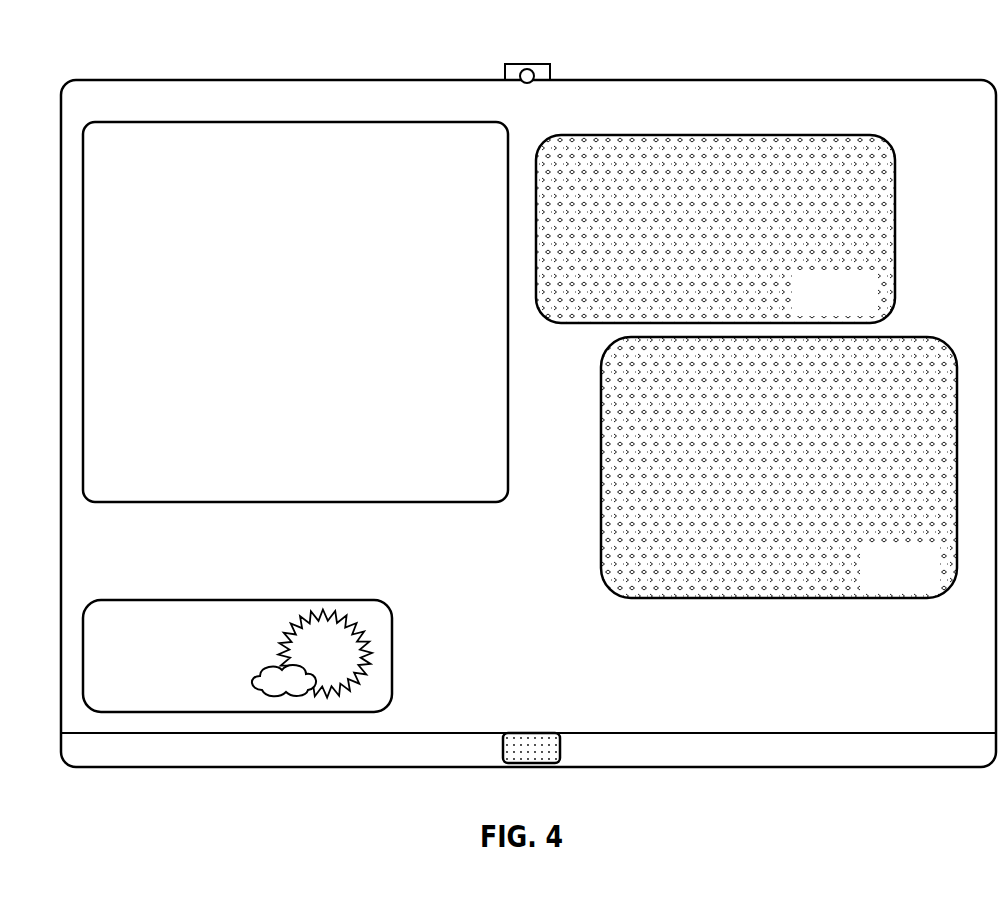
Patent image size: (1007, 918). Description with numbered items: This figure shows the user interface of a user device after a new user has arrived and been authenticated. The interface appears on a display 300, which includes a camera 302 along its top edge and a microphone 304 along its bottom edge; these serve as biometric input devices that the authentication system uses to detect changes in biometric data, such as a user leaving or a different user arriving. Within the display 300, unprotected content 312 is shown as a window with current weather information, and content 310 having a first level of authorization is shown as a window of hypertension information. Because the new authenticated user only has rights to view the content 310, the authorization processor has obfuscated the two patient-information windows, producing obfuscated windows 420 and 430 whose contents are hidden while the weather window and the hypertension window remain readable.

The display 300 is at (973, 727).
The camera 302 is at (553, 60).
The microphone 304 is at (535, 733).
The content having a first level of authorization 310 is at (483, 494).
The unprotected content 312 is at (393, 630).
The obfuscated window 420 is at (852, 304).
The obfuscated window 430 is at (915, 579).